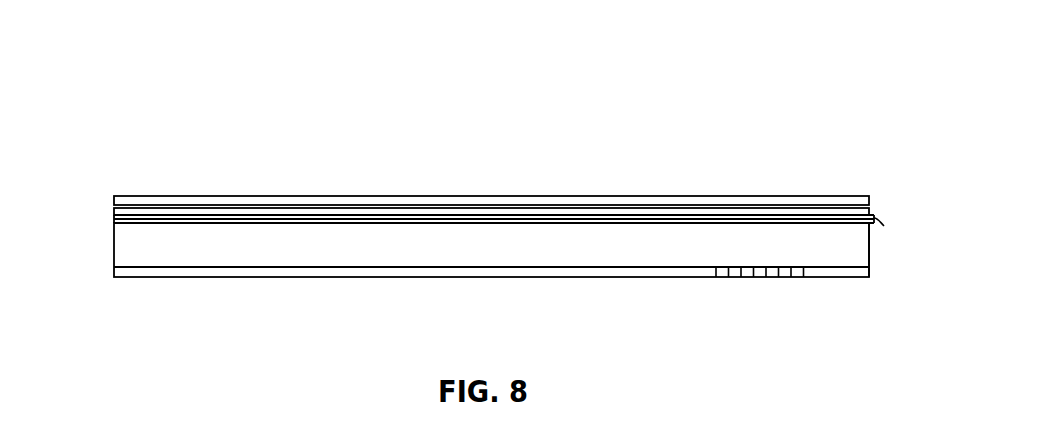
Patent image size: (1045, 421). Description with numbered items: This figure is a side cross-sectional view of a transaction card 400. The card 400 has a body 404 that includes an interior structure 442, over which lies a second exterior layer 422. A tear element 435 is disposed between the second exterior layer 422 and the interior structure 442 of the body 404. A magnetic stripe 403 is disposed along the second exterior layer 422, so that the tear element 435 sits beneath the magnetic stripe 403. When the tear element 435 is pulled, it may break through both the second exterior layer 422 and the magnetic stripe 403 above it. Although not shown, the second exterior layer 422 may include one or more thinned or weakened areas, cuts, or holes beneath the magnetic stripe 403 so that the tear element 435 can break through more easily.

The card 400 is at (127, 50).
The magnetic stripe 403 is at (352, 205).
The second exterior layer 422 is at (532, 213).
The tear element 435 is at (797, 218).
The body 404 is at (168, 256).
The interior structure 442 is at (857, 255).